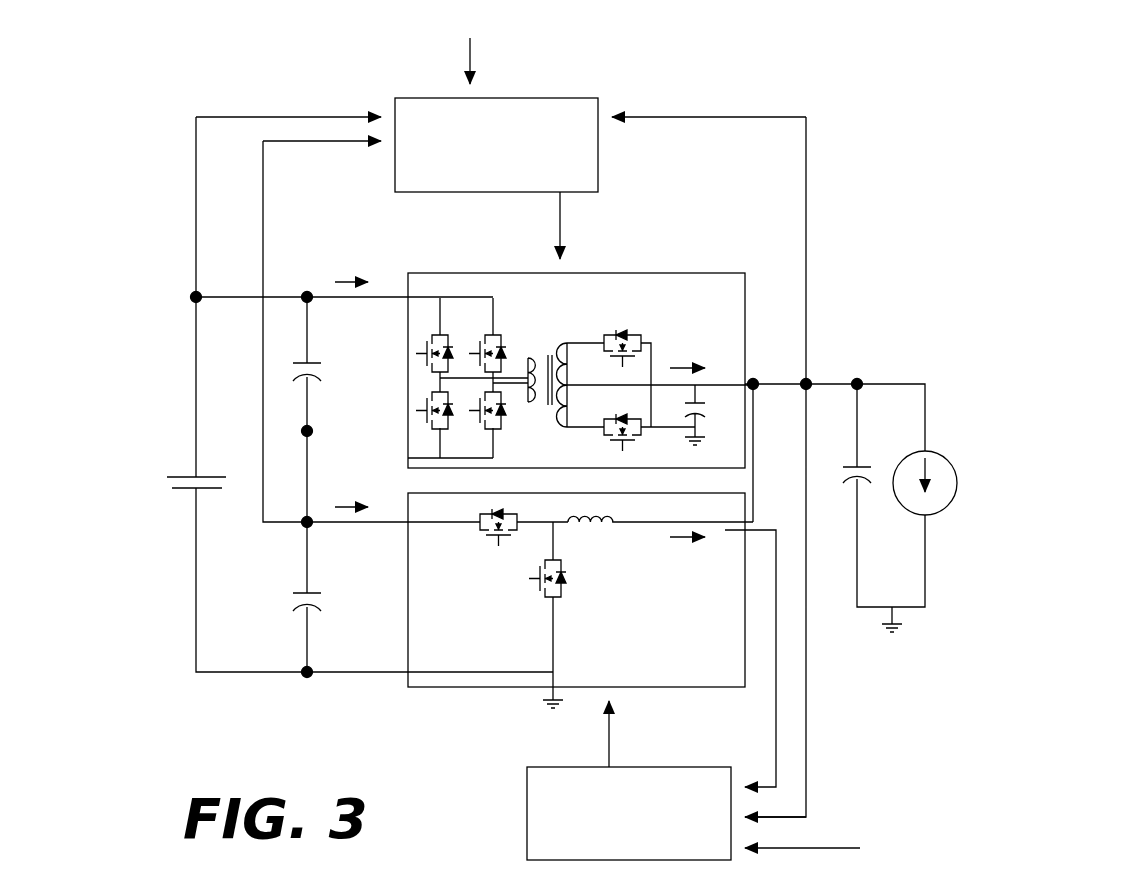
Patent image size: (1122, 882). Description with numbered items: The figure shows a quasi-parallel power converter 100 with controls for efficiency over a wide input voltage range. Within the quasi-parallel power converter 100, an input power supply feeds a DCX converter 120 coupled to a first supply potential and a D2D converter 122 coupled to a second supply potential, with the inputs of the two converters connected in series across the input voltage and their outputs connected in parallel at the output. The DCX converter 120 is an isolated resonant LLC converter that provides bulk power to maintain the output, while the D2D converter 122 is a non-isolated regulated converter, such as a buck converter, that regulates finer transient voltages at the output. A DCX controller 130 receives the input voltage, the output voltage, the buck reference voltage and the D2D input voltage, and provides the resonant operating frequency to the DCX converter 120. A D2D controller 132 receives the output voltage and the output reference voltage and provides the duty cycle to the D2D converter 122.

The quasi-parallel power converter 100 is at (112, 122).
The DCX converter 120 is at (493, 273).
The D2D converter 122 is at (494, 687).
The DCX controller 130 is at (496, 145).
The D2D controller 132 is at (629, 813).